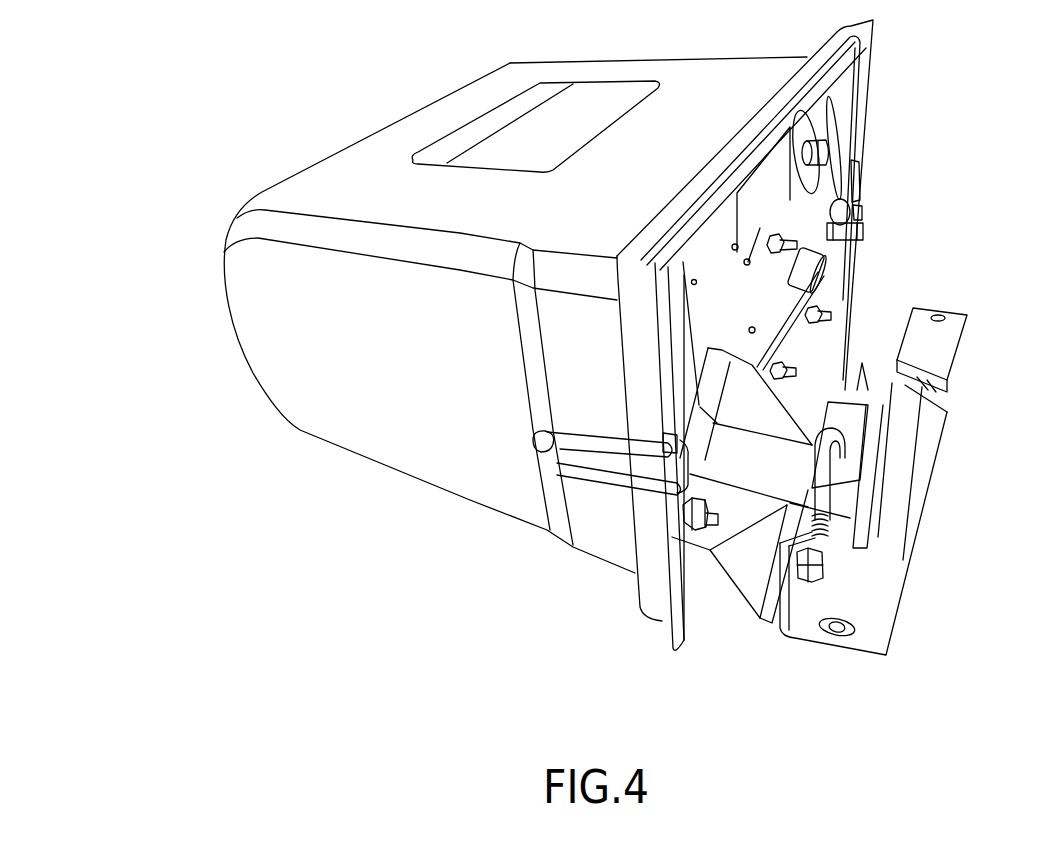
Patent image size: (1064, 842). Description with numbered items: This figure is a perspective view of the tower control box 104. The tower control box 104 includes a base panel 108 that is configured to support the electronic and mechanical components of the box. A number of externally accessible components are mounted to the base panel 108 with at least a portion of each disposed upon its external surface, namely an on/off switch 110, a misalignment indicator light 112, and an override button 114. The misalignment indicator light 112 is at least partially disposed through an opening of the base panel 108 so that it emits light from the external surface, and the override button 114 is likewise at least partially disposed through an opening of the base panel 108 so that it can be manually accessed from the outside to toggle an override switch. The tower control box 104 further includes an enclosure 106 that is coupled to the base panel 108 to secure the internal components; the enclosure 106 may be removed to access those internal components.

The tower control box 104 is at (284, 88).
The enclosure 106 is at (280, 327).
The base panel 108 is at (723, 310).
The on/off switch 110 is at (843, 233).
The misalignment indicator light 112 is at (830, 150).
The override button 114 is at (815, 272).